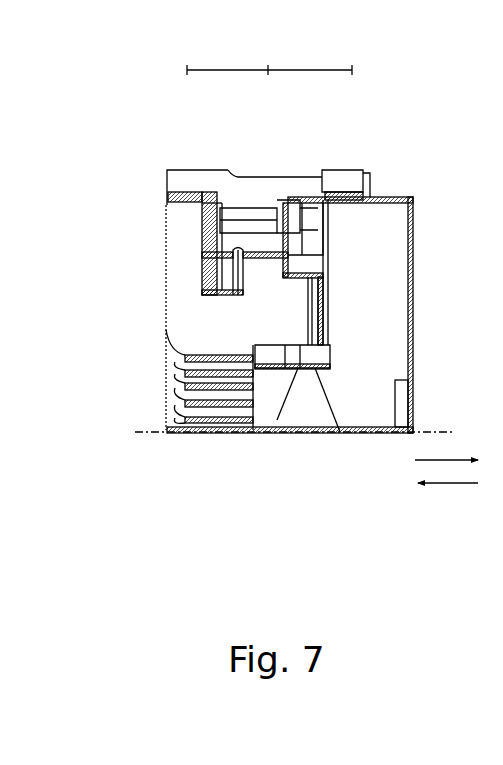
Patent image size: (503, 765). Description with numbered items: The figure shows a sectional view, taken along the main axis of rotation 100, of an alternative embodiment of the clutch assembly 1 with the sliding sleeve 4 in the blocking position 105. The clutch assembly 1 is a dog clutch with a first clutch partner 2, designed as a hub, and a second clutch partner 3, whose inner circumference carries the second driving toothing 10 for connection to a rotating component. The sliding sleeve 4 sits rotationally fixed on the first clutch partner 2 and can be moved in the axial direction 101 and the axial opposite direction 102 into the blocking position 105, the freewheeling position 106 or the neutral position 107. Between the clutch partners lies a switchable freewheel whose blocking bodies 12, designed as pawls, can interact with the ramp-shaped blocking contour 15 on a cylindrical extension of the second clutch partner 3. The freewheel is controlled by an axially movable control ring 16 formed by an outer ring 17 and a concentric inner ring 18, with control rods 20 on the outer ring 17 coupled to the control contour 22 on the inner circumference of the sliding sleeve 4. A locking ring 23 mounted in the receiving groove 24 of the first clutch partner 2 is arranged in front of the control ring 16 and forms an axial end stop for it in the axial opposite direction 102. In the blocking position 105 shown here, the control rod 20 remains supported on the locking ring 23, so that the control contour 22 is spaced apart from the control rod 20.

The clutch assembly 1 is at (178, 143).
The first clutch partner 2 is at (398, 275).
The second clutch partner 3 is at (188, 250).
The sliding sleeve 4 is at (345, 178).
The second driving toothing 10 is at (210, 428).
The blocking bodies 12 is at (330, 323).
The blocking contour 15 is at (277, 420).
The control ring 16 is at (289, 195).
The outer ring 17 is at (315, 262).
The inner ring 18 is at (340, 432).
The control rods 20 is at (312, 170).
The control contour 22 is at (232, 195).
The locking ring 23 is at (250, 176).
The receiving groove 24 is at (200, 207).
The main axis of rotation 100 is at (433, 430).
The axial direction 101 is at (458, 460).
The axial opposite direction 102 is at (455, 484).
The blocking position 105 is at (216, 59).
The freewheeling position 106 is at (267, 59).
The neutral position 107 is at (318, 59).